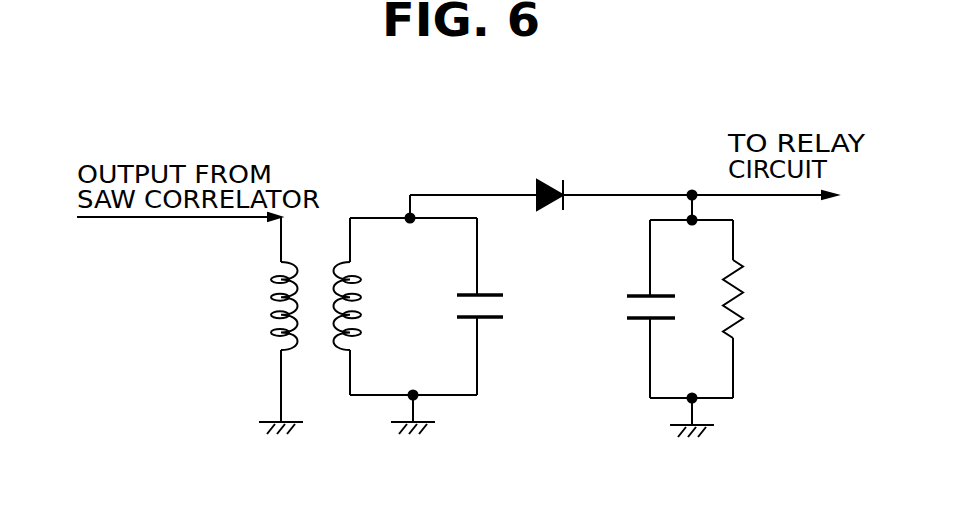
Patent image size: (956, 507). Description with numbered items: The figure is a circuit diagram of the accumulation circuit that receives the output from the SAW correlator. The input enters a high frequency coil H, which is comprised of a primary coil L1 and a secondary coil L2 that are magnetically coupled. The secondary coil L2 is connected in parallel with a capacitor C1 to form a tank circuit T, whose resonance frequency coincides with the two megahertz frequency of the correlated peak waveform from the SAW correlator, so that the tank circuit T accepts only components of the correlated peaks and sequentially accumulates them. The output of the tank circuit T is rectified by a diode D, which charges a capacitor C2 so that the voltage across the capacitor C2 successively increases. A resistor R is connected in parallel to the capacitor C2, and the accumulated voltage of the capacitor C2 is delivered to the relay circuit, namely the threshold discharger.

The high frequency coil H is at (309, 281).
The primary coil L1 is at (272, 304).
The secondary coil L2 is at (355, 320).
The tank circuit T is at (448, 314).
The capacitor C1 is at (488, 322).
The diode D is at (552, 180).
The capacitor C2 is at (634, 320).
The resistor R is at (740, 306).